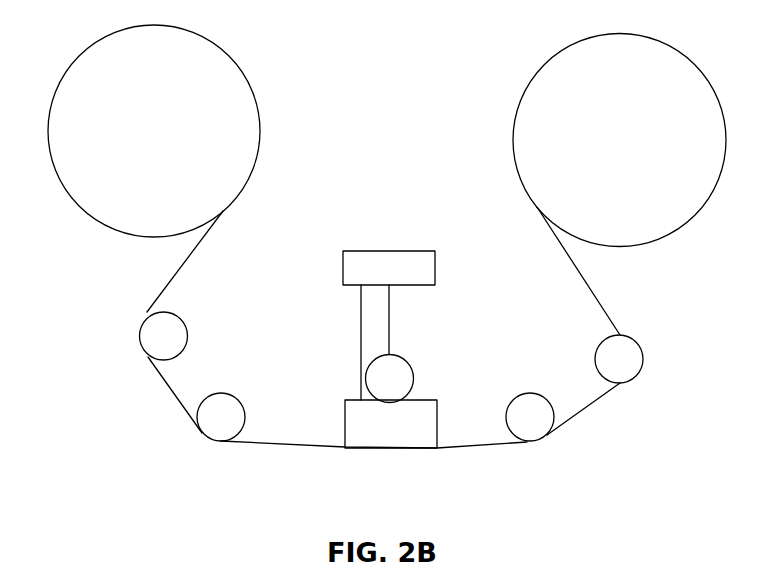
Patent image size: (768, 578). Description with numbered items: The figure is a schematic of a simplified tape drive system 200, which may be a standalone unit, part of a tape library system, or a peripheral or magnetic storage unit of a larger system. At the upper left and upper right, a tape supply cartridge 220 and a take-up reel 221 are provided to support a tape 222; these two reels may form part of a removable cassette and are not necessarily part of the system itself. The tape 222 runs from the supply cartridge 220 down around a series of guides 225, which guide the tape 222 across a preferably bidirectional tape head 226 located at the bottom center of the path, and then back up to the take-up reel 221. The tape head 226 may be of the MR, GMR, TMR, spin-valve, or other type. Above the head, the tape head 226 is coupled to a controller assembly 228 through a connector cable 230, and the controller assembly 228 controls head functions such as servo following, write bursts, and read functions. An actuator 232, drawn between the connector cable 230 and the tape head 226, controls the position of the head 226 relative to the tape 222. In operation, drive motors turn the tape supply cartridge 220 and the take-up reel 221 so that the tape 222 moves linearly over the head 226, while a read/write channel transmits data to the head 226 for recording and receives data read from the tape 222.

The tape drive system 200 is at (121, 274).
The tape supply cartridge 220 is at (258, 108).
The take-up reel 221 is at (688, 222).
The tape 222 is at (282, 448).
The guides 225 is at (218, 393).
The tape head 226 is at (437, 425).
The controller assembly 228 is at (388, 251).
The connector cable 230 is at (361, 375).
The actuator 232 is at (408, 360).